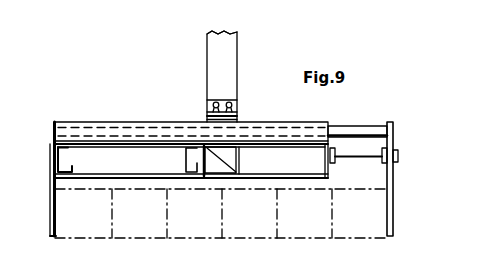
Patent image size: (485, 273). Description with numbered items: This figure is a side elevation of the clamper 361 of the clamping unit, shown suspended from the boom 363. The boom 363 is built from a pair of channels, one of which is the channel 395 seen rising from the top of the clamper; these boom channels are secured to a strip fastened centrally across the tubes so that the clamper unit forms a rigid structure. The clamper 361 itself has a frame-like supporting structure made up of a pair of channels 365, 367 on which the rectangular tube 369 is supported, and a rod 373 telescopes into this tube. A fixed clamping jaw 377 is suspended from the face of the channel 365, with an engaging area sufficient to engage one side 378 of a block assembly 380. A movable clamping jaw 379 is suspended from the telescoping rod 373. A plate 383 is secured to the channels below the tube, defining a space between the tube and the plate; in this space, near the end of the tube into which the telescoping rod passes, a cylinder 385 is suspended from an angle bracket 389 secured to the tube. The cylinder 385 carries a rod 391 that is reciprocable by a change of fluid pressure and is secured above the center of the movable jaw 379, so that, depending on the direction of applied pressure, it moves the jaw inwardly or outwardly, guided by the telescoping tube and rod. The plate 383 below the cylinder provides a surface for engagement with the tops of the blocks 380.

The clamper 361 is at (150, 211).
The boom 363 is at (258, 30).
The channel 365 is at (64, 149).
The channel 367 is at (196, 158).
The rectangular tube 369 is at (283, 112).
The rod 373 is at (370, 125).
The fixed clamping jaw 377 is at (50, 160).
The side of block assembly 378 is at (56, 220).
The movable clamping jaw 379 is at (389, 195).
The block assembly 380 is at (135, 237).
The plate 383 is at (142, 173).
The cylinder 385 is at (297, 162).
The angle bracket 389 is at (236, 161).
The rod 391 is at (366, 158).
The channel 395 is at (216, 63).